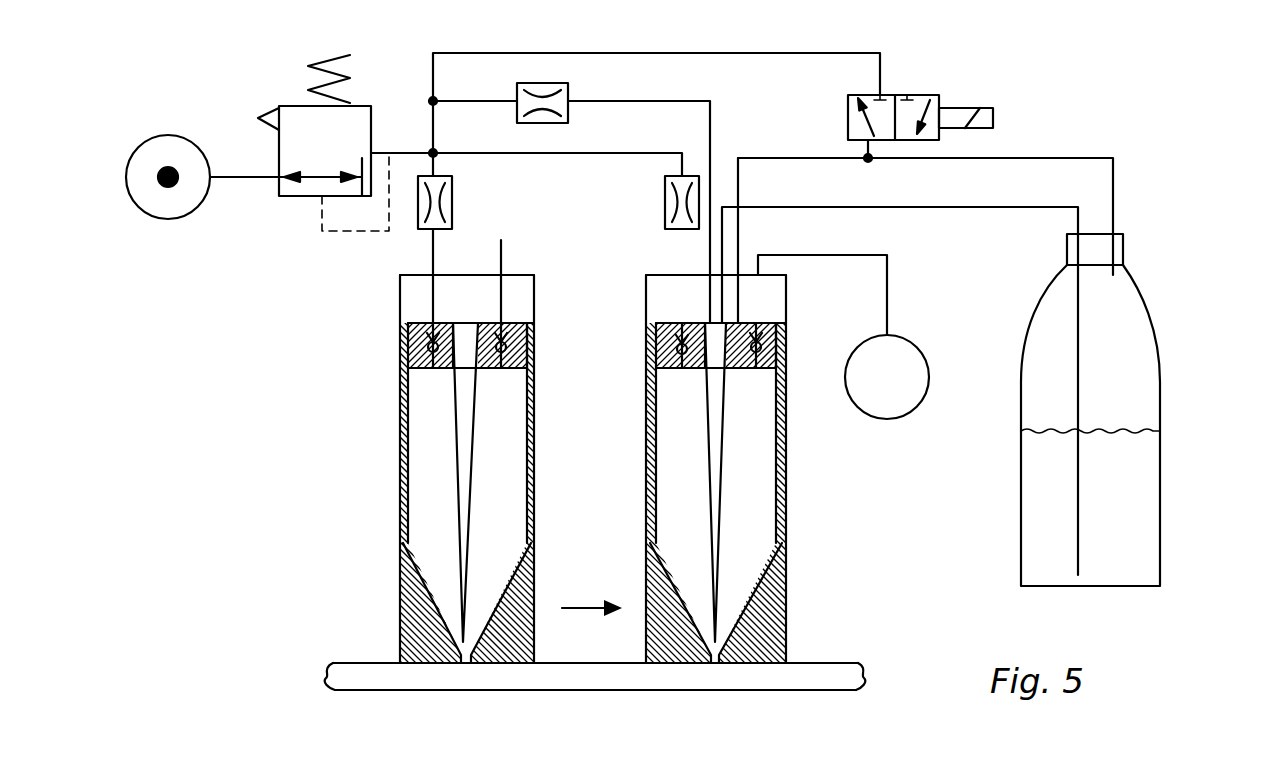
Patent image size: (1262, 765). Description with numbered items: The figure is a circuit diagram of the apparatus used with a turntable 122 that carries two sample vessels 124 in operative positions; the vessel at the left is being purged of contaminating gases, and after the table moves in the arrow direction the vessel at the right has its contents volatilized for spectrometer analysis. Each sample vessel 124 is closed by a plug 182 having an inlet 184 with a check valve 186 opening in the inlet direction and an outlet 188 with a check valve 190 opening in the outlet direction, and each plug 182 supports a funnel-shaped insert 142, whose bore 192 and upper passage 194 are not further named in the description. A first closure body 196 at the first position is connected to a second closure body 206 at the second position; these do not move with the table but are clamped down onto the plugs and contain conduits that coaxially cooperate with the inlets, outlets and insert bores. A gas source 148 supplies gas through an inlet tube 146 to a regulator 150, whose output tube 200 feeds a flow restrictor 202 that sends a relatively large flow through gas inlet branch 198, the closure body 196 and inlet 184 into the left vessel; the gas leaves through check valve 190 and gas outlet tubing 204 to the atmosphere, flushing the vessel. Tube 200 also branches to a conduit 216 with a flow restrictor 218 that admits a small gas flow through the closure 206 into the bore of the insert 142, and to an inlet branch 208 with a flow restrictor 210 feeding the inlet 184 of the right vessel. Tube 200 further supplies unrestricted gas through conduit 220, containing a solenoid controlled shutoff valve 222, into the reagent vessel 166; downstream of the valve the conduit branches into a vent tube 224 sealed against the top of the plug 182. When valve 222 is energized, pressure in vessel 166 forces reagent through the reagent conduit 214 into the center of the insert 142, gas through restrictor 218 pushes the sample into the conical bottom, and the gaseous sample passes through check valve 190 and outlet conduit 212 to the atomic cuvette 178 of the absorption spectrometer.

The turntable 122 is at (835, 667).
The sample vessel 124 is at (400, 430).
The funnel-shaped insert 142 is at (458, 460).
The inlet tube 146 is at (245, 176).
The gas source 148 is at (170, 134).
The regulator 150 is at (352, 96).
The reagent vessel 166 is at (1161, 355).
The atomic cuvette 178 is at (926, 352).
The plug 182 is at (400, 343).
The inlet 184 is at (433, 330).
The check valve 186 is at (404, 370).
The outlet 188 is at (527, 322).
The check valve 190 is at (527, 347).
The channel 192 is at (470, 370).
The valve stem 194 is at (470, 322).
The first closure body 196 is at (400, 298).
The gas inlet branch 198 is at (428, 257).
The tube 200 is at (402, 152).
The flow restrictor 202 is at (453, 185).
The gas outlet tubing 204 is at (504, 240).
The second closure body 206 is at (790, 277).
The inlet branch 208 is at (623, 151).
The flow restrictor 210 is at (665, 225).
The outlet conduit 212 is at (843, 255).
The reagent conduit 214 is at (872, 207).
The conduit 216 is at (660, 100).
The flow restrictor 218 is at (565, 88).
The conduit 220 is at (728, 50).
The solenoid controlled shutoff valve 222 is at (893, 94).
The vent tube 224 is at (803, 156).